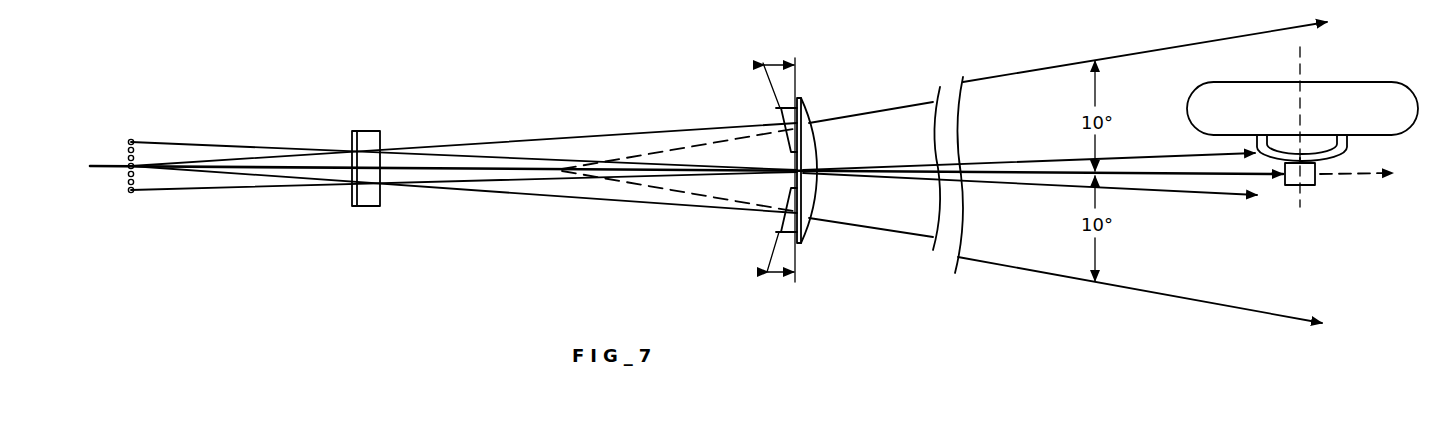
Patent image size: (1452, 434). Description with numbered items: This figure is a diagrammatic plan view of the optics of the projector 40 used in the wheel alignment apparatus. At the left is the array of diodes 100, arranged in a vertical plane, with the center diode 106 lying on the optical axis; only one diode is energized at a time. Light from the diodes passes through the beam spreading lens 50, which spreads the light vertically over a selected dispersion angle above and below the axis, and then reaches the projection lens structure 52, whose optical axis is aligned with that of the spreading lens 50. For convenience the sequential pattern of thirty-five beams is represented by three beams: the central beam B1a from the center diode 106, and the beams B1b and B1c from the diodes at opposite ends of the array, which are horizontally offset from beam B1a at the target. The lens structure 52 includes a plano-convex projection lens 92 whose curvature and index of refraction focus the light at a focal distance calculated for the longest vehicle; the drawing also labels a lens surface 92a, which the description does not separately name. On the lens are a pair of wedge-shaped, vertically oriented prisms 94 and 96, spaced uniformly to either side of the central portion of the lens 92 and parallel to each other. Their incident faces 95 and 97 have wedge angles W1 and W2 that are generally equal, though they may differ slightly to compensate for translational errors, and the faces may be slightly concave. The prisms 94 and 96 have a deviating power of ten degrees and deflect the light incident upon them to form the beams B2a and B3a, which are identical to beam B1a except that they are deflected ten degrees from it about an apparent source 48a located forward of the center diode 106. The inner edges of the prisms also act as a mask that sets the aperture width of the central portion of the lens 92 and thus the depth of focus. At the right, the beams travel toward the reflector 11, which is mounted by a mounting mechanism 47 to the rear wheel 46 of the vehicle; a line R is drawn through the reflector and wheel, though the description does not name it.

The diodes 100 is at (133, 136).
The center diode 106 is at (128, 172).
The beam spreading lens 50 is at (370, 131).
The projector 40 is at (574, 114).
The apparent source 48a is at (551, 170).
The projection lens structure 52 is at (814, 104).
The prism 94 is at (776, 108).
The incident face 95 is at (790, 120).
The prism 96 is at (776, 232).
The incident face 97 is at (790, 212).
The planar lens surface 92a is at (797, 153).
The plano-convex projection lens 92 is at (816, 153).
The wedge angle W1 is at (778, 60).
The wedge angle W2 is at (766, 277).
The central beam B1a is at (310, 170).
The beam B1b is at (186, 143).
The beam B1c is at (180, 191).
The deflected beam B2a is at (1038, 68).
The deflected beam B3a is at (1043, 273).
The rear wheel 46 is at (1389, 120).
The mounting mechanism 47 is at (1338, 142).
The reflector 11 is at (1320, 187).
The reference line R is at (1307, 131).